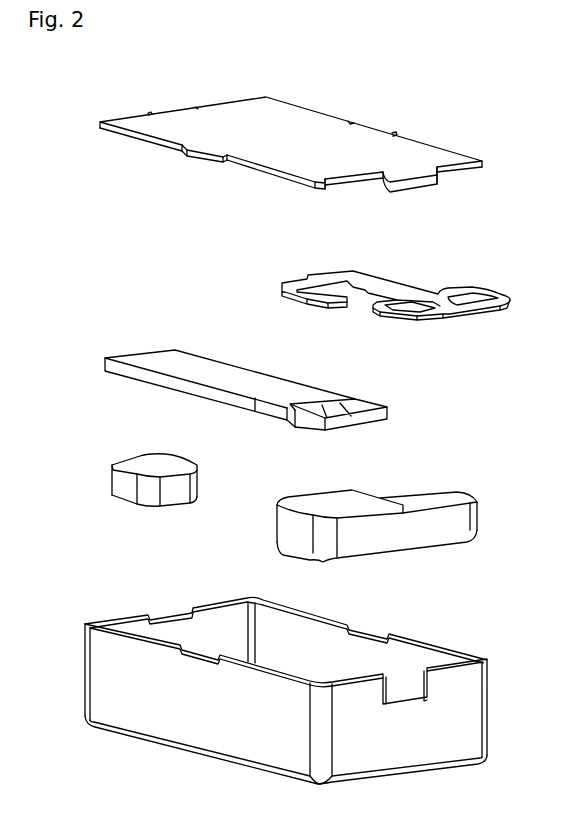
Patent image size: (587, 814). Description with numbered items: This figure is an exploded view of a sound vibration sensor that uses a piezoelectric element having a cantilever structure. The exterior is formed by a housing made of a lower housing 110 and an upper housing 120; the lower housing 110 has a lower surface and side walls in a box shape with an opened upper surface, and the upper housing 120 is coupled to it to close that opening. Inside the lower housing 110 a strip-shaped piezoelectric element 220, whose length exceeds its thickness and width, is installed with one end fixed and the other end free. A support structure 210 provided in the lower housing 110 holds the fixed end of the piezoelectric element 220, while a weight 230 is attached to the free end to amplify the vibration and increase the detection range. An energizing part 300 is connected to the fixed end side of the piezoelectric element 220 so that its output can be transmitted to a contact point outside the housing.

The lower housing 110 is at (477, 700).
The upper housing 120 is at (430, 152).
The support structure 210 is at (440, 498).
The piezoelectric element 220 is at (362, 407).
The weight 230 is at (118, 483).
The energizing part 300 is at (475, 297).